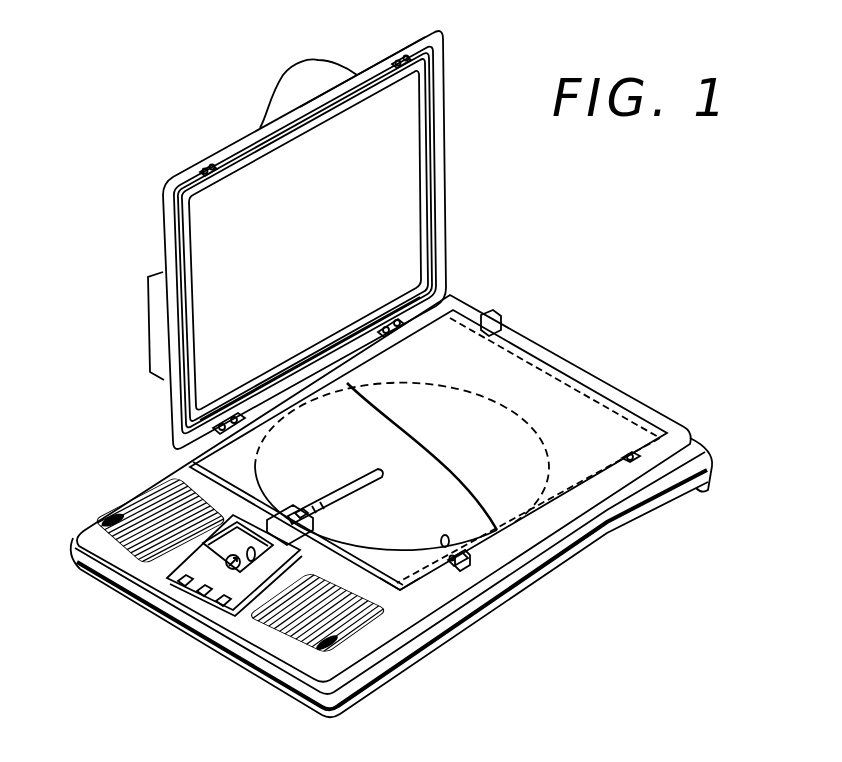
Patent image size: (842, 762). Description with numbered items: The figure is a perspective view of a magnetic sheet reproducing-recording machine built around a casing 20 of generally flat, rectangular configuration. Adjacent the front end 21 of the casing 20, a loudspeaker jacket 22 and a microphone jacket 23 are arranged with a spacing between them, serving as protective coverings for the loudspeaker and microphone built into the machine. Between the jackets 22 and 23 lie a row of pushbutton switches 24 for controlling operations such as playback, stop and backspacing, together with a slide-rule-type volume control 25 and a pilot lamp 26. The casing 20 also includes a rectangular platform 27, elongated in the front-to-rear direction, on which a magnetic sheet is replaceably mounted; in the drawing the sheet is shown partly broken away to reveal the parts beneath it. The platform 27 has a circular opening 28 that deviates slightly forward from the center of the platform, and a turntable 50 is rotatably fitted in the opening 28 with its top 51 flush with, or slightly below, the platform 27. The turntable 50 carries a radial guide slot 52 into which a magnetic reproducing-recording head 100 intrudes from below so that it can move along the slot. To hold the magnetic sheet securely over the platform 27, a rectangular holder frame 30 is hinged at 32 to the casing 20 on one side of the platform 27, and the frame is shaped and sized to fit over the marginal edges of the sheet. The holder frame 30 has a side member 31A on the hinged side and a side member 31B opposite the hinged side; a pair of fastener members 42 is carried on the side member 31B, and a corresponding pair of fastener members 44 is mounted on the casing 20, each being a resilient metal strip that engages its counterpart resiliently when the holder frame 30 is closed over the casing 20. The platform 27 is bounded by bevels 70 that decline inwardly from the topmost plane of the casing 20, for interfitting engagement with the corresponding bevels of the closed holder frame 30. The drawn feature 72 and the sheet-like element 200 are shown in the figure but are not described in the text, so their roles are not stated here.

The casing 20 is at (588, 524).
The front end 21 is at (216, 640).
The loudspeaker jacket 22 is at (150, 518).
The microphone jacket 23 is at (310, 640).
The pushbutton switches 24 is at (202, 594).
The slide-rule-type volume control 25 is at (220, 604).
The pilot lamp 26 is at (183, 584).
The platform 27 is at (403, 570).
The circular opening 28 is at (473, 580).
The holder frame 30 is at (162, 213).
The side member 31A is at (304, 366).
The side member 31B is at (367, 66).
The hinge 32 is at (230, 418).
The fastener members 42 is at (205, 168).
The fastener members 44 is at (629, 455).
The turntable 50 is at (400, 525).
The top 51 is at (357, 524).
The radial guide slot 52 is at (354, 492).
The bevels 70 is at (165, 433).
The cable cover bump 72 is at (245, 157).
The magnetic reproducing-recording head 100 is at (299, 517).
The transparent platen cover 200 is at (522, 378).